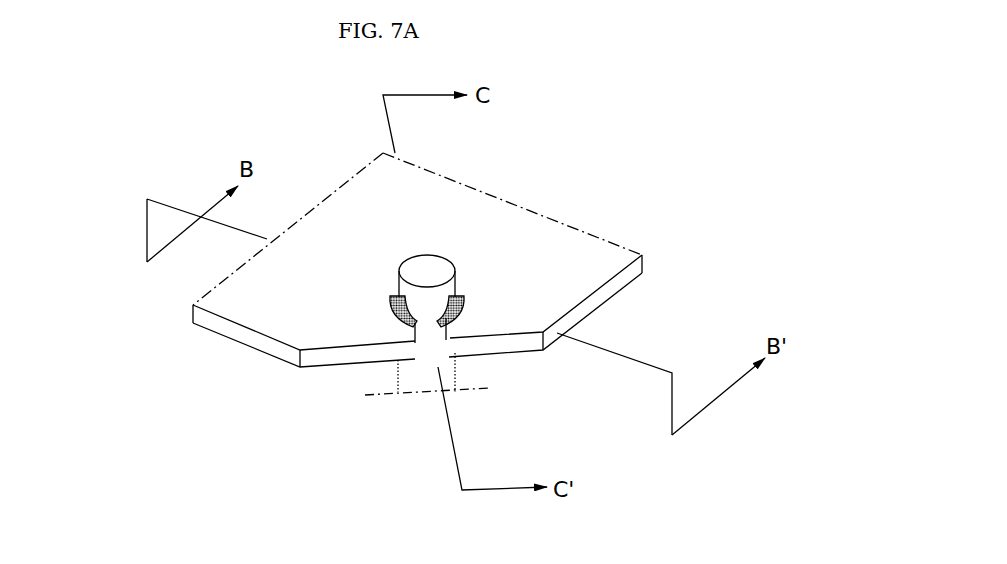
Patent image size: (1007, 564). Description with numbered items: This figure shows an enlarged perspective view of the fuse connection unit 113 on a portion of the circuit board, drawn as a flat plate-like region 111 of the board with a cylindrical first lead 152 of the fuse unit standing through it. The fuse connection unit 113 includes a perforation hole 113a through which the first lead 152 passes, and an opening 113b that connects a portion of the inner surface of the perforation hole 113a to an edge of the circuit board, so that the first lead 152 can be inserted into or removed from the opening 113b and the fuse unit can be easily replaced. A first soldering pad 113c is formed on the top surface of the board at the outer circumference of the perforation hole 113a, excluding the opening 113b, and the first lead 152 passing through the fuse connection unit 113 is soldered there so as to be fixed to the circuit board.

The plate / substrate 111 is at (600, 270).
The fuse connection unit 113 is at (415, 535).
The perforation hole 113a is at (406, 322).
The opening 113b is at (446, 335).
The first soldering pad 113c is at (447, 318).
The first lead 152 is at (428, 262).